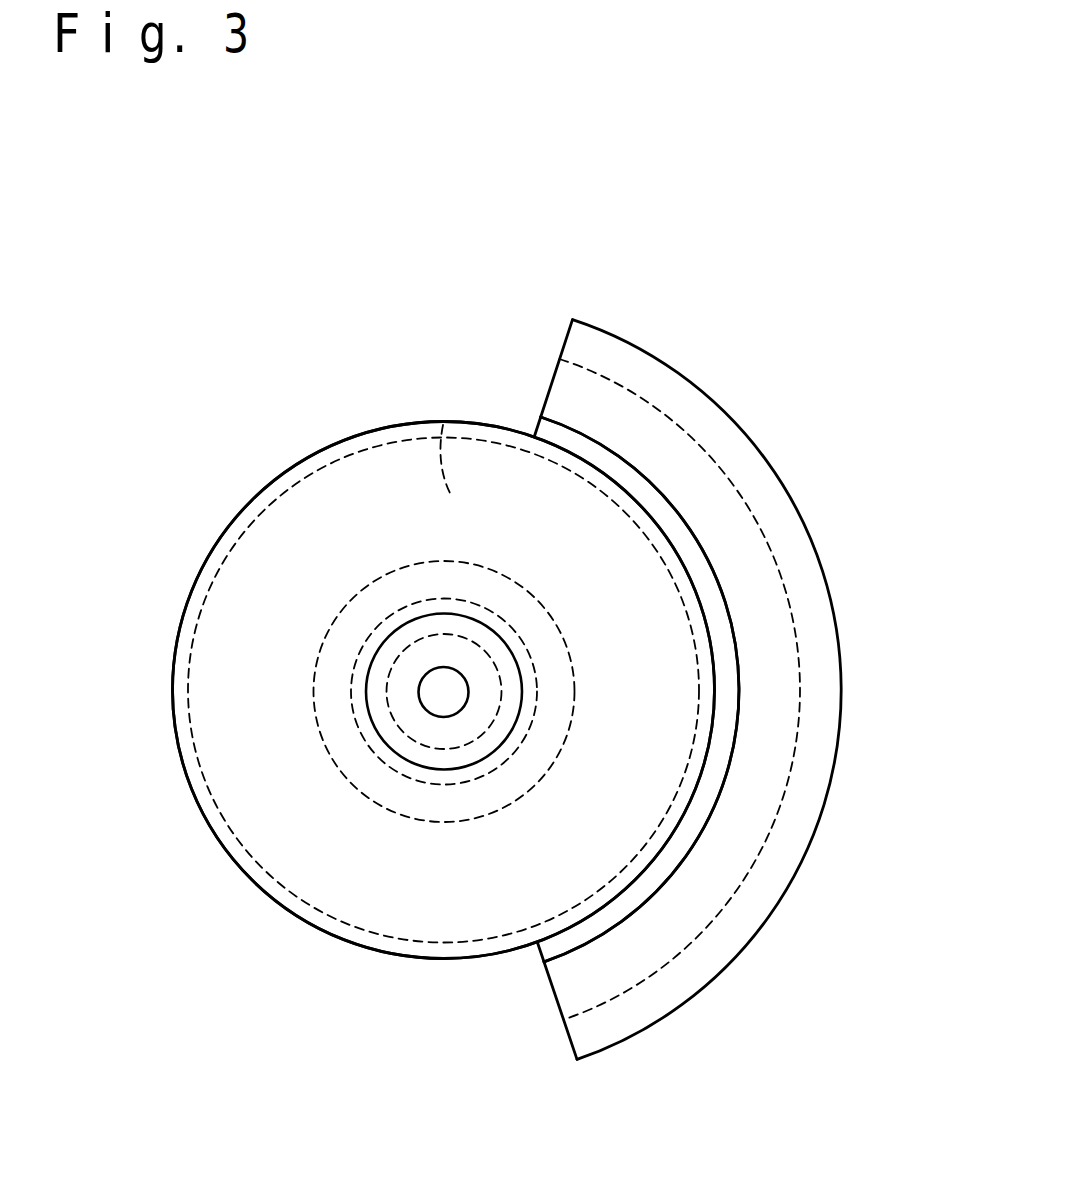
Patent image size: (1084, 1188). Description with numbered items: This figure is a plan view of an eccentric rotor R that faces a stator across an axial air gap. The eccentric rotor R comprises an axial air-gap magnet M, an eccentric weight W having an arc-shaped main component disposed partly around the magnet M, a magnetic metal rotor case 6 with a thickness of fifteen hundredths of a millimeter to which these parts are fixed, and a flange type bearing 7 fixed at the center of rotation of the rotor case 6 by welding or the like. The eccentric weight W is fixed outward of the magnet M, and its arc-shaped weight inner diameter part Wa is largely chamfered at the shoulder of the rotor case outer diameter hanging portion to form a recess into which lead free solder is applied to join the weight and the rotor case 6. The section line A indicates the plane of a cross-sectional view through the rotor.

The rotor case 6 is at (217, 538).
The flange type bearing 7 is at (417, 643).
The axial air-gap magnet M is at (443, 425).
The eccentric weight W is at (832, 598).
The arc-shaped weight inner diameter part Wa is at (707, 587).
The eccentric rotor R is at (232, 903).
The section line A- A is at (138, 693).